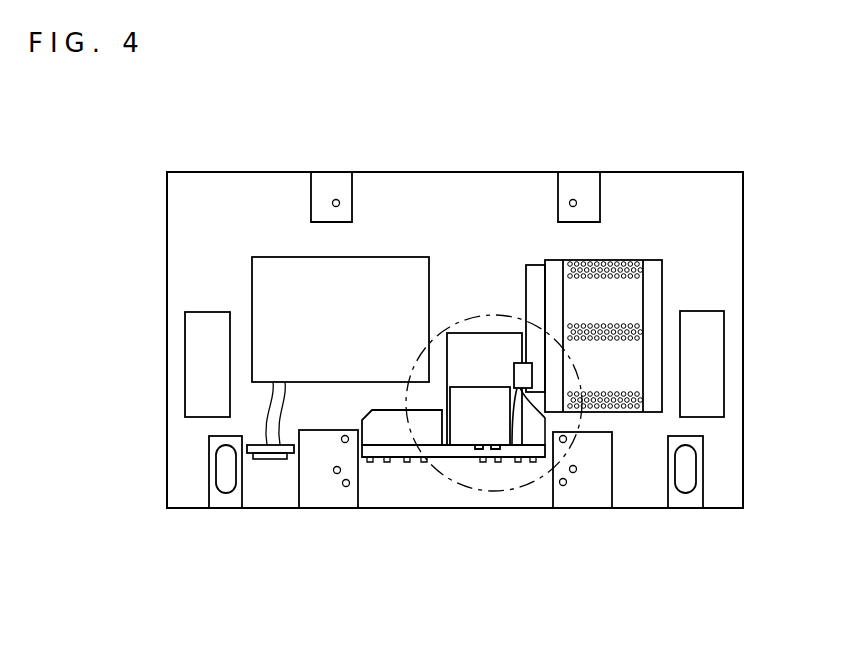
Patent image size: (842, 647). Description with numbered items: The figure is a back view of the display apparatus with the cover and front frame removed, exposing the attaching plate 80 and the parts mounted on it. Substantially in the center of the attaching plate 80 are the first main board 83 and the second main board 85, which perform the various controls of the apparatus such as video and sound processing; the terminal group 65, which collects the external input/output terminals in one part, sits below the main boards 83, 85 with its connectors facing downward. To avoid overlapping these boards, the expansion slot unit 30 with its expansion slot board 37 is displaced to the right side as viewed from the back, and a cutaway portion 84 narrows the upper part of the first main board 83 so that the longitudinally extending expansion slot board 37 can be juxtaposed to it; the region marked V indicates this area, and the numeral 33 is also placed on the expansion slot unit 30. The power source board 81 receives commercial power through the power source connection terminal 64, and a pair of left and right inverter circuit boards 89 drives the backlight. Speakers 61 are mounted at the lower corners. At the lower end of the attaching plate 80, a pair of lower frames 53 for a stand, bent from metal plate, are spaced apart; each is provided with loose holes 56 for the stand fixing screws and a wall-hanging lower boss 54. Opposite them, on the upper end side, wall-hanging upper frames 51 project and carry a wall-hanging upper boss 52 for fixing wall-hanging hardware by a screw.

The expansion slot unit 30 is at (625, 252).
The pin holes 33 is at (615, 376).
The expansion slot board 37 is at (538, 267).
The wall-hanging upper frame 51 is at (327, 180).
The wall-hanging upper boss 52 is at (337, 199).
The lower frame for a stand 53 is at (312, 500).
The wall-hanging lower boss 54 is at (334, 472).
The loose holes 56 is at (341, 440).
The speakers 61 is at (219, 501).
The power source connection terminal 64 is at (268, 460).
The terminal group 65 is at (453, 457).
The attaching plate 80 is at (717, 180).
The power source board 81 is at (272, 265).
The first main board 83 is at (472, 348).
The cutaway portion 84 is at (513, 462).
The second main board 85 is at (392, 427).
The inverter circuit boards 89 is at (195, 368).
The enlarged region V is at (405, 495).